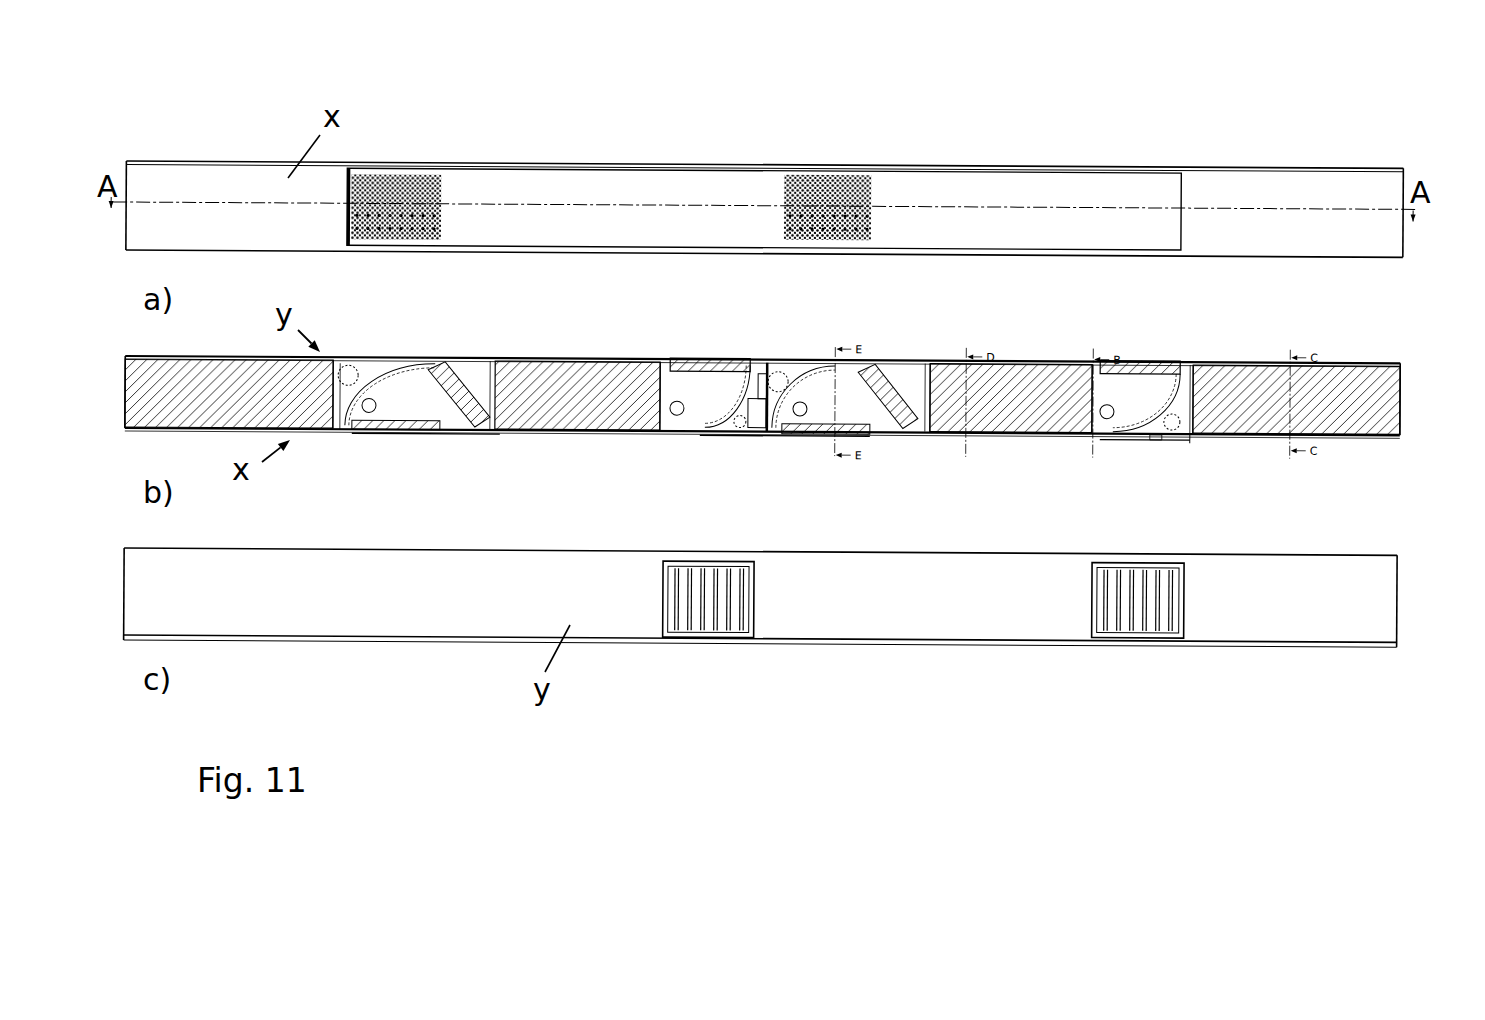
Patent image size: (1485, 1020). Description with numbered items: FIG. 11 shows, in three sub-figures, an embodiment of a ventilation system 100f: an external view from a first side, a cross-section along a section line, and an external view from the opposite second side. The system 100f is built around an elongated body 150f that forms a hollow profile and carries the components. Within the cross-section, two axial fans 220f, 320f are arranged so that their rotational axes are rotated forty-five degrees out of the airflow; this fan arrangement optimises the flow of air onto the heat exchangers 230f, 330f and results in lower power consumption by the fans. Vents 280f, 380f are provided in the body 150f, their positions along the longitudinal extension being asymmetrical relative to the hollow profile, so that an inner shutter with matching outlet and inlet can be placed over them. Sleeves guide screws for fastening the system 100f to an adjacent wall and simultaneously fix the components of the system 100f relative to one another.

The system 100f is at (1324, 330).
The body 150f is at (1320, 420).
The axial fan 220f is at (463, 415).
The heat exchanger 230f is at (600, 420).
The vent 280f is at (390, 428).
The axial fan 320f is at (887, 405).
The heat exchanger 330f is at (1030, 425).
The vent 380f is at (813, 428).